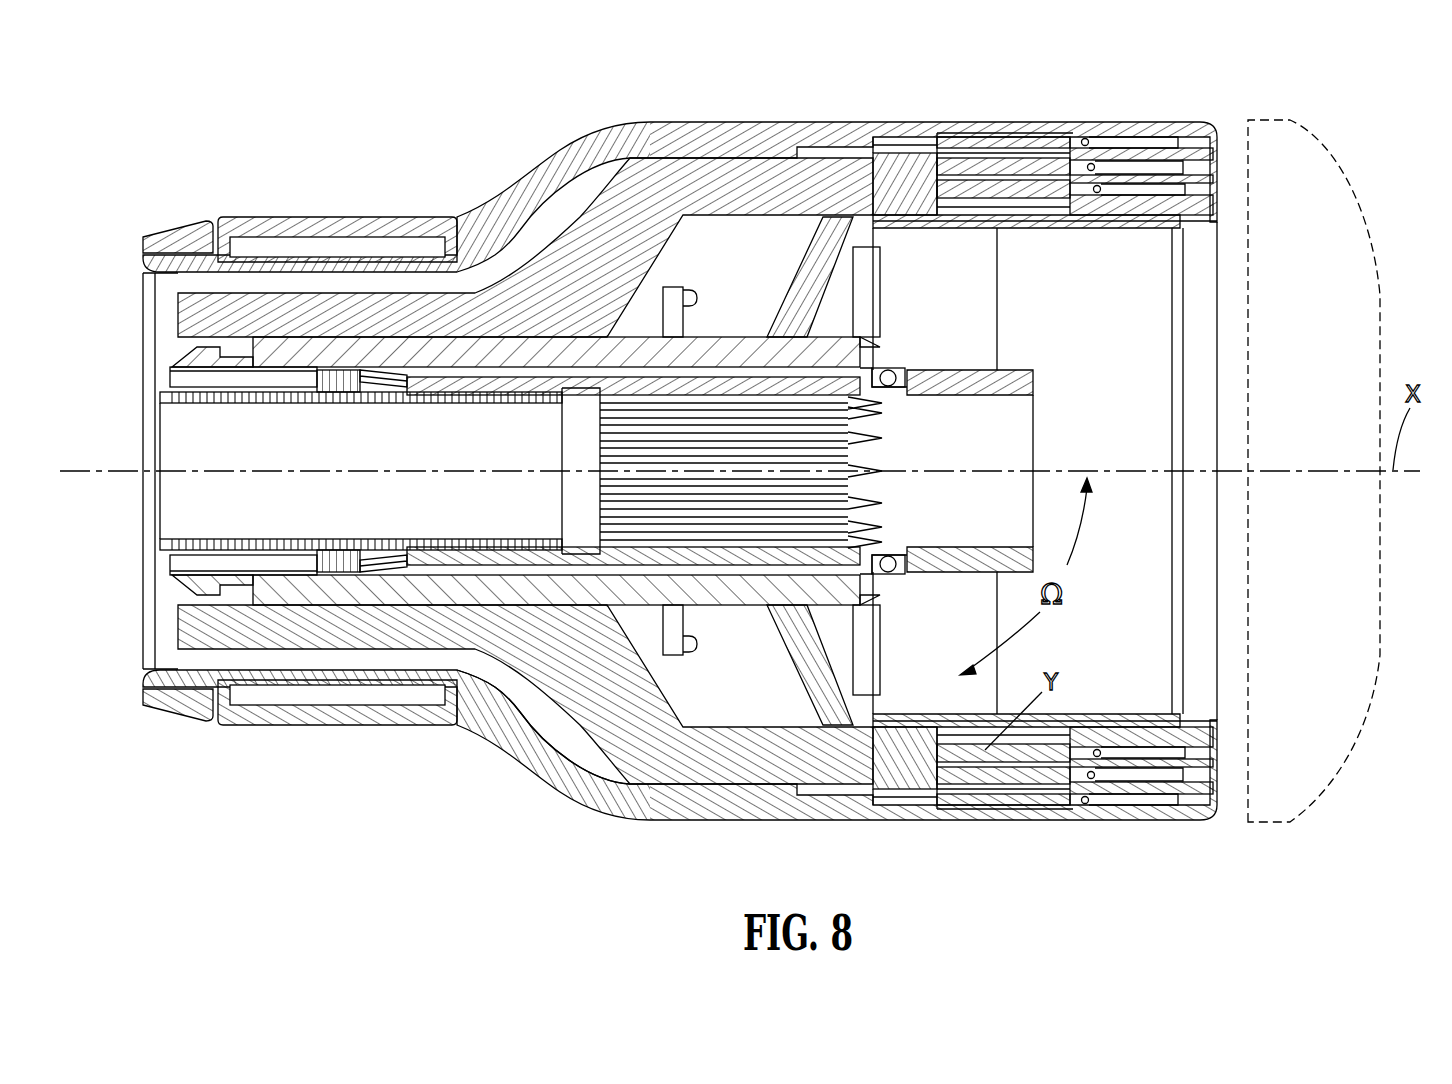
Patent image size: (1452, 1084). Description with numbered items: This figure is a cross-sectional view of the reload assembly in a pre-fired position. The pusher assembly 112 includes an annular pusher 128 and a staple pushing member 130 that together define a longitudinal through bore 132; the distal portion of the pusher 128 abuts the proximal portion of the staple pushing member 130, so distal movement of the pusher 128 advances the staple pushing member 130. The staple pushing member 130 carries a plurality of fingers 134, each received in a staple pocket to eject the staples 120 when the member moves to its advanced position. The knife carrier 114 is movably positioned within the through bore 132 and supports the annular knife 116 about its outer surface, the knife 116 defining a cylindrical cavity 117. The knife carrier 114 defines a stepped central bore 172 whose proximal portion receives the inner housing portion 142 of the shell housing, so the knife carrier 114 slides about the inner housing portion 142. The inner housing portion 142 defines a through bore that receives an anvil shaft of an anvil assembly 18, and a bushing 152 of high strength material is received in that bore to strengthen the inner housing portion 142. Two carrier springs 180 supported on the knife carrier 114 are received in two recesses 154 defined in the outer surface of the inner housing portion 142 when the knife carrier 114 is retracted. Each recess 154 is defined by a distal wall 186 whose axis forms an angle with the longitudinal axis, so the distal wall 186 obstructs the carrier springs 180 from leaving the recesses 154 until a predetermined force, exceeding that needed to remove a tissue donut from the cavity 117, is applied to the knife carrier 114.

The anvil assembly 18 is at (1377, 252).
The pusher assembly 112 is at (574, 628).
The knife carrier 114 is at (557, 340).
The annular knife 116 is at (1125, 716).
The cylindrical cavity 117 is at (1098, 548).
The staples 120 is at (1148, 142).
The annular pusher 128 is at (637, 735).
The staple pushing member 130 is at (907, 770).
The longitudinal through bore 132 is at (292, 605).
The fingers 134 is at (1050, 165).
The inner housing portion 142 is at (1030, 372).
The bushing 152 is at (226, 553).
The recesses 154 is at (893, 556).
The stepped central bore 172 is at (390, 570).
The carrier springs 180 is at (1038, 847).
The distal wall 186 is at (855, 702).